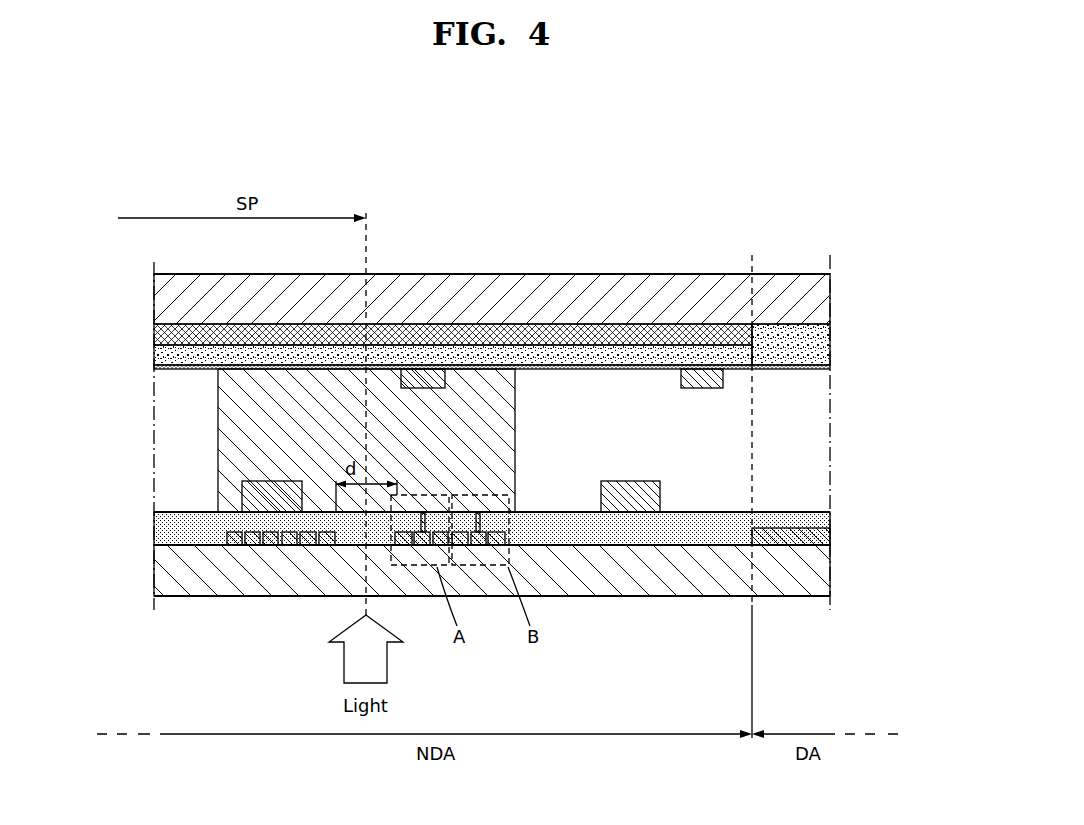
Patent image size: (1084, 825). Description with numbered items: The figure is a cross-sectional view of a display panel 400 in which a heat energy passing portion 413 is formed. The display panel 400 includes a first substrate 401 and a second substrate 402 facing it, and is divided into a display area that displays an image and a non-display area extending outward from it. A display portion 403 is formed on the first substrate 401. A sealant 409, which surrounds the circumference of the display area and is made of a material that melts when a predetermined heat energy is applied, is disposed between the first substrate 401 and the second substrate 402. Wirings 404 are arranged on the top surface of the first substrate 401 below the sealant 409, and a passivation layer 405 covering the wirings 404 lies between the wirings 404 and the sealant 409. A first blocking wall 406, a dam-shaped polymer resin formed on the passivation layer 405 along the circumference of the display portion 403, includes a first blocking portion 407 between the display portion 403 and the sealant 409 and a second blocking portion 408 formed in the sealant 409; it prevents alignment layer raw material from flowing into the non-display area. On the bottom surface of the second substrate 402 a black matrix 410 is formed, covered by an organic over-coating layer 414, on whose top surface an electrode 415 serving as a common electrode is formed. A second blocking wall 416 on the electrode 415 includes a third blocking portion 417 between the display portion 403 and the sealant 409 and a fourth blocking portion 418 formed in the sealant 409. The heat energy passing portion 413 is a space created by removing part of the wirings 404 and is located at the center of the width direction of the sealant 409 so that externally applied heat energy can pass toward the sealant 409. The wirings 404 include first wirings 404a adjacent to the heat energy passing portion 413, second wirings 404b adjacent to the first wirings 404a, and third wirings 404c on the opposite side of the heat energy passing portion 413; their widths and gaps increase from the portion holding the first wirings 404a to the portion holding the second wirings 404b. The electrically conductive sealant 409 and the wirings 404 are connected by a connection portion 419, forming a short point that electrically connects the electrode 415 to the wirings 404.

The display panel 400 is at (150, 180).
The first substrate 401 is at (817, 570).
The second substrate 402 is at (815, 305).
The display portion 403 is at (818, 533).
The wirings 404 is at (308, 597).
The first wirings 404a is at (424, 548).
The second wirings 404b is at (480, 548).
The third wirings 404c is at (232, 548).
The passivation layer 405 is at (822, 520).
The first blocking wall 406 is at (451, 453).
The first blocking portion 407 is at (615, 486).
The second blocking portion 408 is at (283, 481).
The sealant 409 is at (227, 458).
The black matrix 410 is at (154, 334).
The heat energy passing portion 413 is at (335, 566).
The over-coating layer 414 is at (817, 347).
The electrode 415 is at (817, 367).
The second blocking wall 416 is at (562, 282).
The third blocking portion 417 is at (683, 303).
The fourth blocking portion 418 is at (436, 376).
The connection portion 419 is at (513, 515).